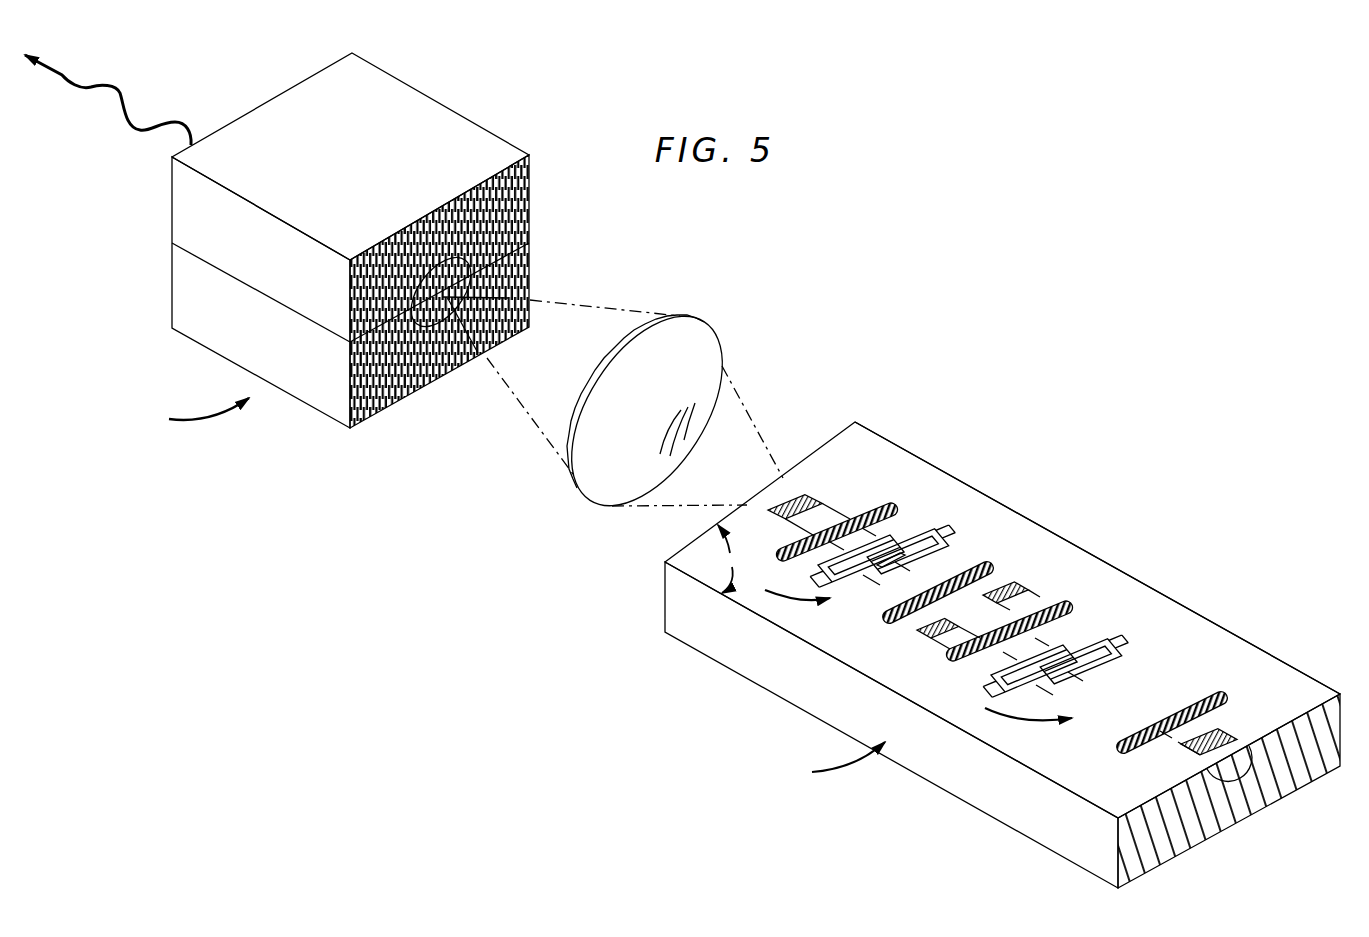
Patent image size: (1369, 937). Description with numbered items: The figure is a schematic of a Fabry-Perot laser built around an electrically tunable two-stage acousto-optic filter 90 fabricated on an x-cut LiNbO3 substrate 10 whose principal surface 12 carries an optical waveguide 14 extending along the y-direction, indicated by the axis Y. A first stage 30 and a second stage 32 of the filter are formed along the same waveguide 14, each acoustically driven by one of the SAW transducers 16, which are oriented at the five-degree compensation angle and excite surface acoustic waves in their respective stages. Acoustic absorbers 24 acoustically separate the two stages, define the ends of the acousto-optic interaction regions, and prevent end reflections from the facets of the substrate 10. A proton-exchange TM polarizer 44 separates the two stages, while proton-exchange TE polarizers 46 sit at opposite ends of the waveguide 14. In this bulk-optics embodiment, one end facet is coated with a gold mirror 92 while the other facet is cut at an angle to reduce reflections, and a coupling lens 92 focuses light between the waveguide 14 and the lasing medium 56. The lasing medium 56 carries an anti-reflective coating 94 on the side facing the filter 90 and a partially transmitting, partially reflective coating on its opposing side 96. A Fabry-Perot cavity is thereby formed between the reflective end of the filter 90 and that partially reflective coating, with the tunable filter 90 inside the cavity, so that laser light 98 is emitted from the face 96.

The LiNbO3 substrate 10 is at (770, 663).
The principal surface 12 is at (1173, 618).
The optical waveguide 14 is at (930, 548).
The SAW transducers 16 is at (927, 567).
The acoustic absorbers 24 is at (870, 505).
The first stage 30 is at (784, 589).
The second stage 32 is at (1016, 707).
The proton-exchange TM polarizer 44 is at (1015, 583).
The proton-exchange TE polarizers 46 is at (810, 497).
The lasing medium 56 is at (196, 416).
The acousto-optic filter 90 is at (836, 765).
The coupling lens 92 is at (698, 335).
The anti-reflective coating 94 is at (518, 193).
The opposing side 96 is at (269, 102).
The laser light 98 is at (78, 87).
The Y axis Y is at (732, 559).